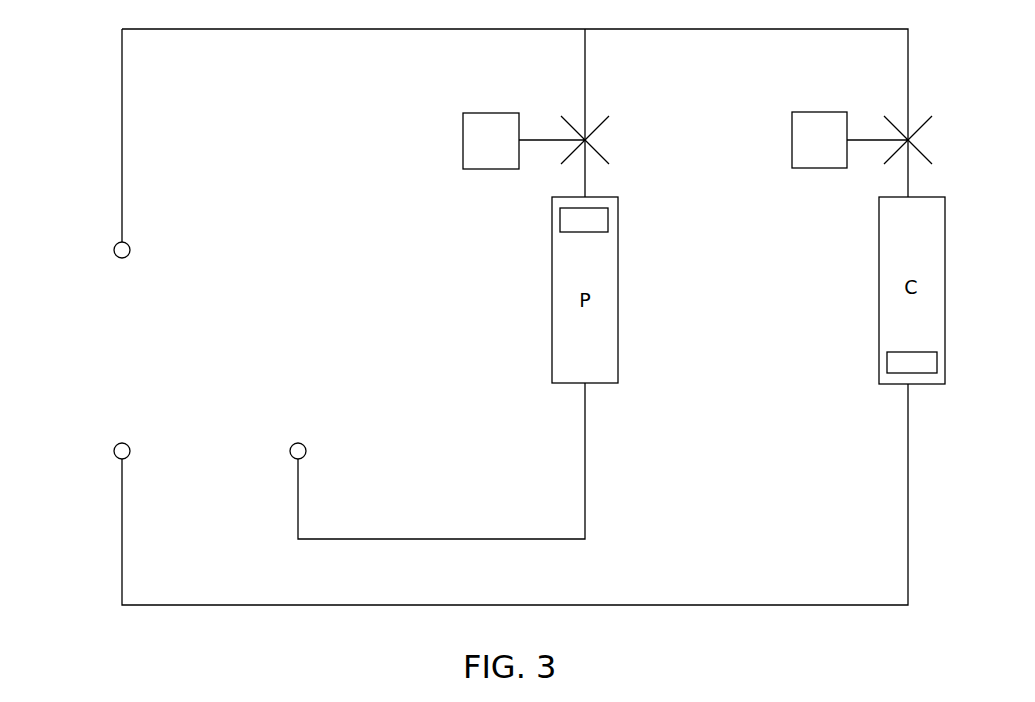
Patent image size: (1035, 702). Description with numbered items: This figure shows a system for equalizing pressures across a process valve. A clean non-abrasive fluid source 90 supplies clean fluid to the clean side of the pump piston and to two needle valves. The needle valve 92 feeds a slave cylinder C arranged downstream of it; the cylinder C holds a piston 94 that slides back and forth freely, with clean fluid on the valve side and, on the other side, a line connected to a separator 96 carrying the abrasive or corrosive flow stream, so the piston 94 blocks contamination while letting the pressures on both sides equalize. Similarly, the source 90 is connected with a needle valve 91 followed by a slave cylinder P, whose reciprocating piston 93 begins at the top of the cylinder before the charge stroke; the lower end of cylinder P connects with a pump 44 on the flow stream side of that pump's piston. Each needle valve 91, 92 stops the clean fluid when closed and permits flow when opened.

The clean non-abrasive fluid source 90 is at (113, 254).
The needle valve 91 is at (462, 139).
The needle valve 92 is at (791, 139).
The pump sensor 93 is at (606, 222).
The piston 94 is at (930, 367).
The separator 96 is at (131, 446).
The pump 44 is at (307, 446).